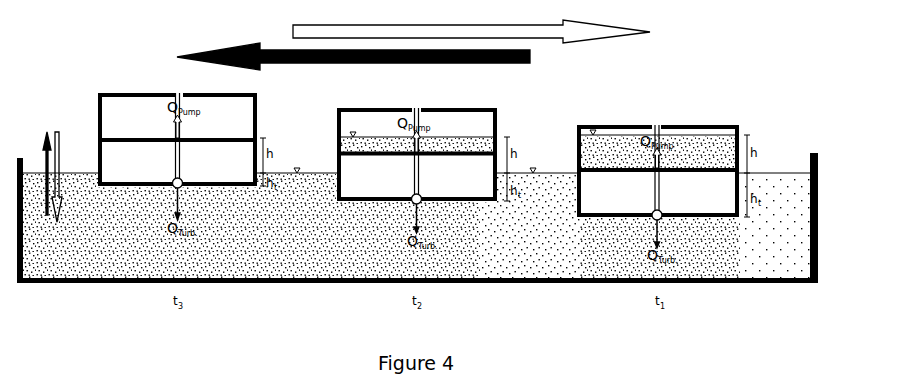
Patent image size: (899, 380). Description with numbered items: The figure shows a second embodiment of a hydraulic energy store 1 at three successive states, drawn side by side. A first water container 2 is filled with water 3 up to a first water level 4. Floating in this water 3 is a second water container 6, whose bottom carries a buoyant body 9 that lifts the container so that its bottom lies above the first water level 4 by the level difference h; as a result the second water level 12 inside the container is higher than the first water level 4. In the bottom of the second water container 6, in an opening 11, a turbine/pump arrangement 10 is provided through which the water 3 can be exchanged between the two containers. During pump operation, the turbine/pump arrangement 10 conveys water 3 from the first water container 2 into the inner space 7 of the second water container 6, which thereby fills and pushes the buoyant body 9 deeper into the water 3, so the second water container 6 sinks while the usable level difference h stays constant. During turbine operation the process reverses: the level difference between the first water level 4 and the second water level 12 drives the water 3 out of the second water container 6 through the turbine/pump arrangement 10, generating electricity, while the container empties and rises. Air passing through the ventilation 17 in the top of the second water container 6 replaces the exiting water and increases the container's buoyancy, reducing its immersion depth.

The pumped storage power plant 1 is at (53, 43).
The first water container 2 is at (128, 279).
The water 3 is at (416, 206).
The first water level 4 is at (298, 168).
The second water container 6 is at (98, 130).
The inner space 7 is at (240, 122).
The buoyant body 9 is at (418, 174).
The turbine/pump arrangement 10 is at (172, 180).
The opening 11 is at (177, 190).
The second water level 12 is at (116, 137).
The ventilation 17 is at (175, 90).